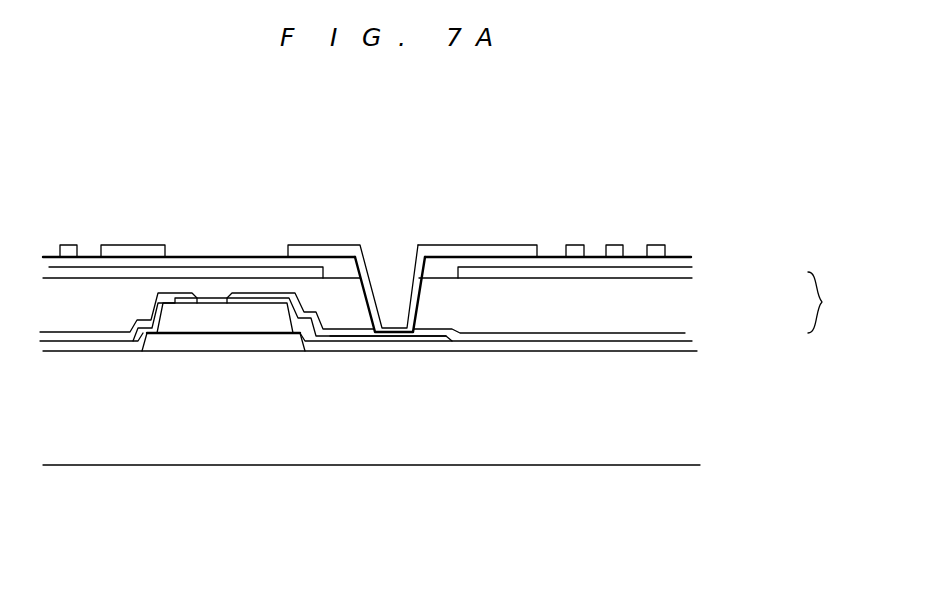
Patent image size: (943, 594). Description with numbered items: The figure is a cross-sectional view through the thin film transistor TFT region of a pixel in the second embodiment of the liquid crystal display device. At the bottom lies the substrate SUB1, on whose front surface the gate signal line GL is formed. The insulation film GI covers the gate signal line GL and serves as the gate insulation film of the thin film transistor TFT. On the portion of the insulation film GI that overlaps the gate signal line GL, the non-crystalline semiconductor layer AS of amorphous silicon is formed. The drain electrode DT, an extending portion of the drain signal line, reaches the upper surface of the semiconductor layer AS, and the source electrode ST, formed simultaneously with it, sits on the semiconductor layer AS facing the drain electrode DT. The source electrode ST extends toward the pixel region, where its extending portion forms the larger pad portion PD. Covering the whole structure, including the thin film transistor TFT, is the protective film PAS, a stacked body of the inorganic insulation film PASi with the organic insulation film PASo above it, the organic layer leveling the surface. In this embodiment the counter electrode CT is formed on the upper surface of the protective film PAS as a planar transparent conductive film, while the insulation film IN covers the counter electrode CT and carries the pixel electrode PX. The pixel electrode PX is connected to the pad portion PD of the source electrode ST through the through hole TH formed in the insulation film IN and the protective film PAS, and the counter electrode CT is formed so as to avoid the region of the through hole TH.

The substrate SUB1 is at (272, 438).
The gate signal line GL is at (183, 347).
The insulation film GI is at (573, 347).
The semiconductor layer AS is at (225, 320).
The drain electrode DT is at (183, 300).
The source electrode ST is at (272, 299).
The pad portion PD is at (395, 337).
The inorganic insulation film PASi is at (677, 337).
The organic insulation film PASo is at (655, 299).
The protective film PAS is at (843, 302).
The through hole TH is at (410, 300).
The insulation film IN is at (682, 261).
The pixel electrode PX is at (67, 245).
The counter electrode CT is at (123, 272).
The thin film transistor TFT is at (118, 376).